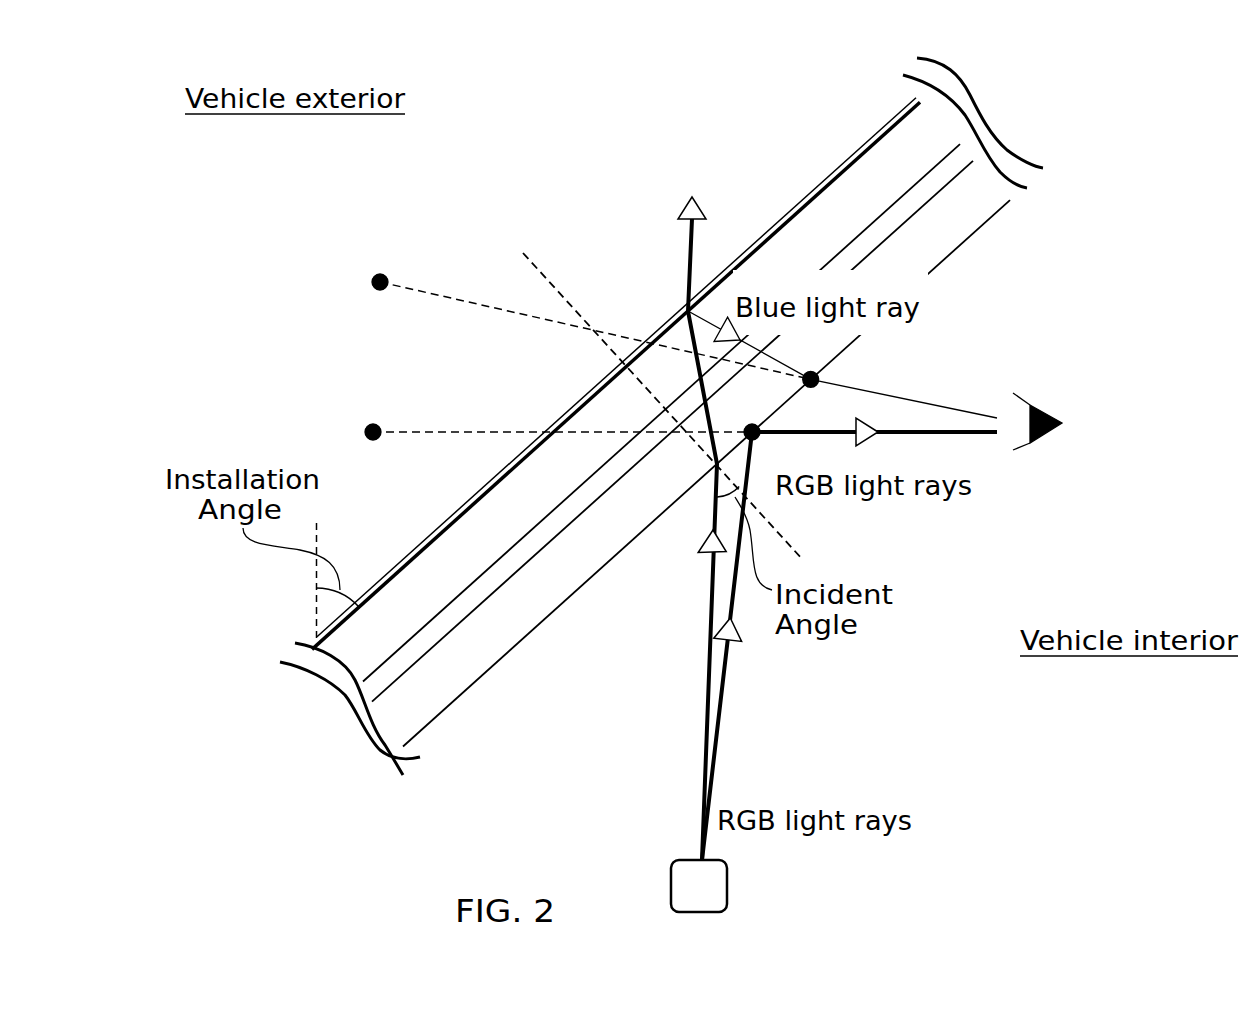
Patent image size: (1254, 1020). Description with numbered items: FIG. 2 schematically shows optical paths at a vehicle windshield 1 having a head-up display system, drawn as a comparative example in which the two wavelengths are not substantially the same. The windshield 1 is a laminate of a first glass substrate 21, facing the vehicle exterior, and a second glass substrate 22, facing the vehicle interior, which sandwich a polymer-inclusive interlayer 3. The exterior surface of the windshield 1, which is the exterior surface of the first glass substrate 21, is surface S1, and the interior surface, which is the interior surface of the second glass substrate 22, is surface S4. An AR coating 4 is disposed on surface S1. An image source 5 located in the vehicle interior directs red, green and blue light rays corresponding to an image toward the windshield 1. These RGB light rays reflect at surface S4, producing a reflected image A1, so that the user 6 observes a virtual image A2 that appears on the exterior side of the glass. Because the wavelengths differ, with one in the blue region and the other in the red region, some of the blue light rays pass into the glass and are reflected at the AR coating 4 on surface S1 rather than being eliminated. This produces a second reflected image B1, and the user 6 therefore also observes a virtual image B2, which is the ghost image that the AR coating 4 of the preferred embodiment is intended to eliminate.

The vehicle windshield 1 is at (617, 202).
The polymer-inclusive interlayer 3 is at (698, 401).
The AR coating 4 is at (817, 190).
The image source 5 is at (706, 903).
The user 6 is at (1047, 412).
The first glass substrate 21 is at (500, 521).
The second glass substrate 22 is at (963, 210).
The exterior surface S1 is at (875, 142).
The interior surface S4 is at (540, 628).
The reflected image A1 is at (746, 419).
The virtual image A2 is at (354, 418).
The reflected image B1 is at (818, 363).
The virtual image B2 is at (354, 265).